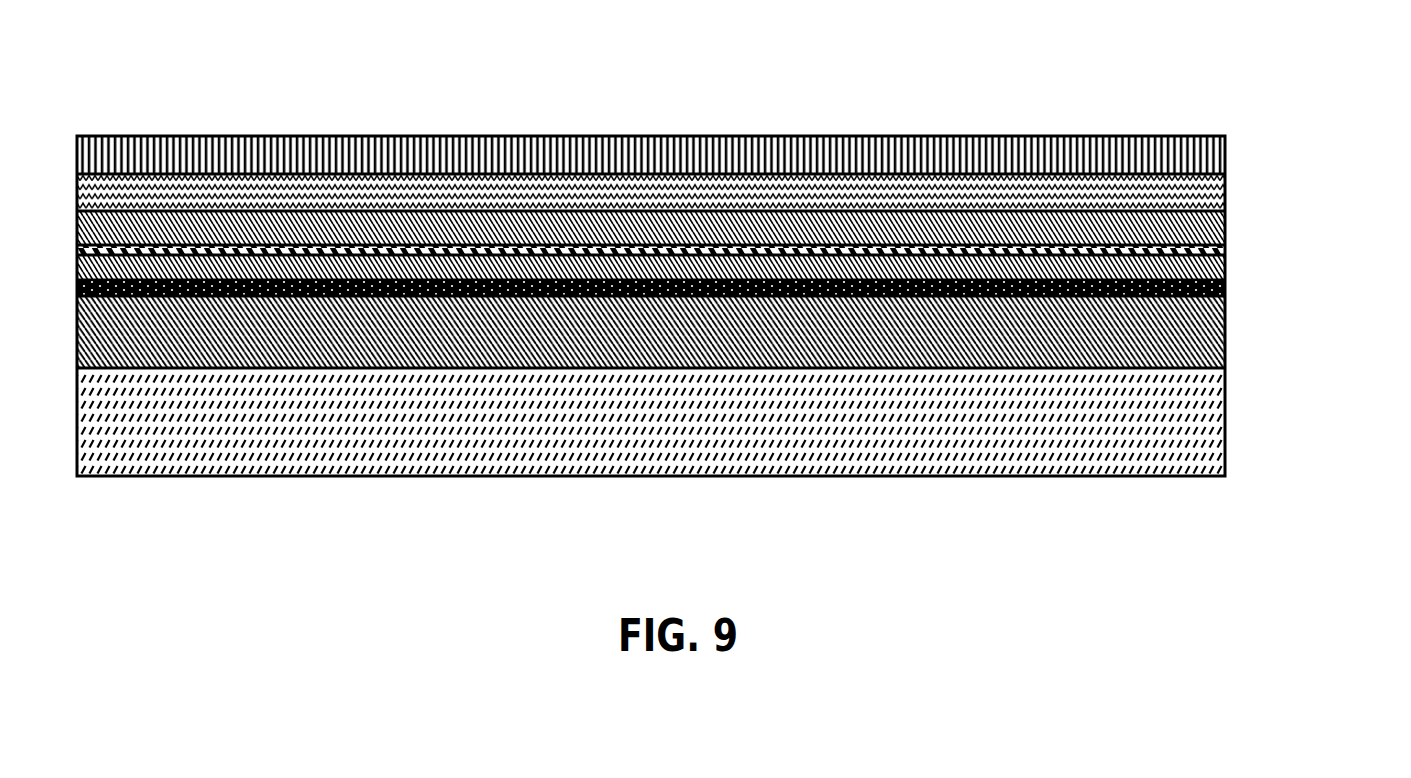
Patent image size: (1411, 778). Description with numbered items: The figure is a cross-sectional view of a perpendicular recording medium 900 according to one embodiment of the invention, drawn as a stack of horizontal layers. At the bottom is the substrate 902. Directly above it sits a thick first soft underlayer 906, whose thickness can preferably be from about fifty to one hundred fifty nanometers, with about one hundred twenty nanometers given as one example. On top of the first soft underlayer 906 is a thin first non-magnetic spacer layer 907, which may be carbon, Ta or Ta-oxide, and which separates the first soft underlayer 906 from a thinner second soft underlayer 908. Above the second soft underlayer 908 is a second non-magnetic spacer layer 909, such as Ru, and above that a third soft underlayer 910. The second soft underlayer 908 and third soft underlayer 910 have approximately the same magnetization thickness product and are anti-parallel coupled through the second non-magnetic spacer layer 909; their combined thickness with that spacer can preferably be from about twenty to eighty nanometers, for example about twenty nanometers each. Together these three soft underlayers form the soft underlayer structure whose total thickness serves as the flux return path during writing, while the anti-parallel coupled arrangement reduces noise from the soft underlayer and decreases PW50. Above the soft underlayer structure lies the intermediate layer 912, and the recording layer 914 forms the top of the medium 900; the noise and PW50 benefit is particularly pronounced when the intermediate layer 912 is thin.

The perpendicular recording medium 900 is at (654, 124).
The substrate 902 is at (662, 468).
The first soft underlayer 906 is at (1217, 326).
The first non-magnetic spacer layer 907 is at (1217, 274).
The second soft underlayer 908 is at (1217, 252).
The second non-magnetic spacer layer 909 is at (1217, 237).
The third soft underlayer 910 is at (1217, 220).
The intermediate layer 912 is at (1217, 183).
The recording layer 914 is at (1217, 140).